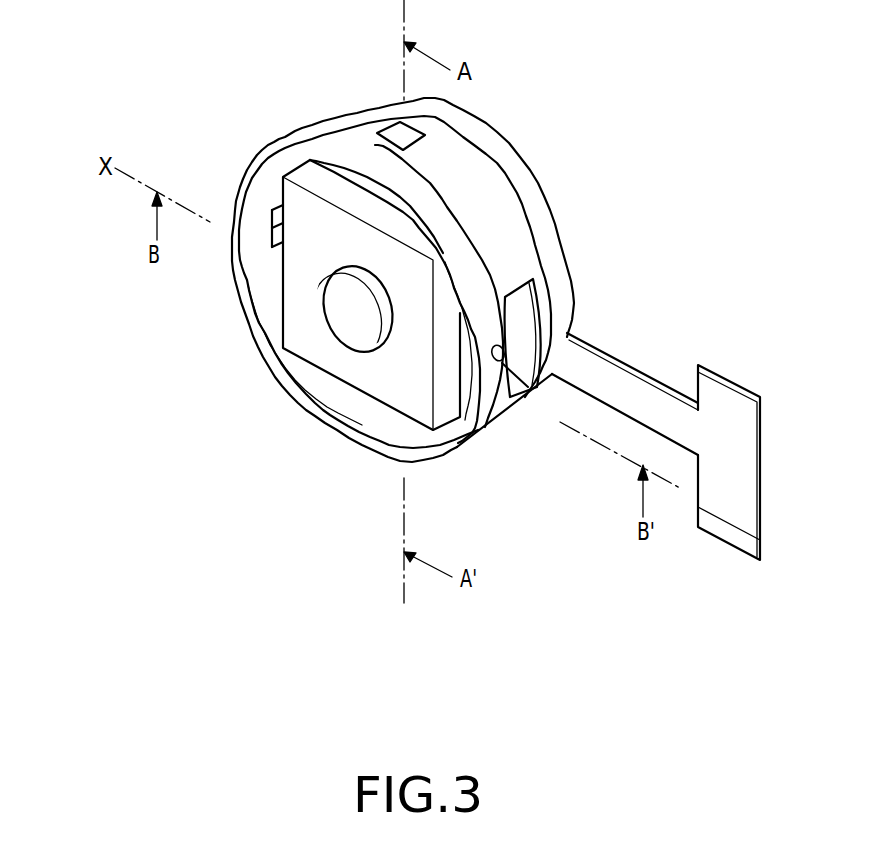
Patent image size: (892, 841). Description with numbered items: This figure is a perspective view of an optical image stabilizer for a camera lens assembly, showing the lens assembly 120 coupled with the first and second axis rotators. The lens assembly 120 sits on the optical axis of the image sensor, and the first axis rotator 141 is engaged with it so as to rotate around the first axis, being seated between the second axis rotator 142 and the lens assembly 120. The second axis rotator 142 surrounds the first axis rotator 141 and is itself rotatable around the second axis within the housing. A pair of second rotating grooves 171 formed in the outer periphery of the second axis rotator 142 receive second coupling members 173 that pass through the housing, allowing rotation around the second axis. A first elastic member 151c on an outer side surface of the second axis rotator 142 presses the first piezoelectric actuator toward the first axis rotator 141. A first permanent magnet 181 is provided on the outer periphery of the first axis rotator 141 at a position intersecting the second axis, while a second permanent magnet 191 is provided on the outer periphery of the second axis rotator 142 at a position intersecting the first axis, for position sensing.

The lens assembly 120 is at (386, 386).
The first axis rotator 141 is at (265, 203).
The second axis rotator 142 is at (483, 185).
The first elastic member 151c is at (525, 308).
The second rotating groove 171 is at (500, 364).
The second coupling member 173 is at (527, 400).
The first permanent magnet 181 is at (277, 228).
The second permanent magnet 191 is at (384, 128).